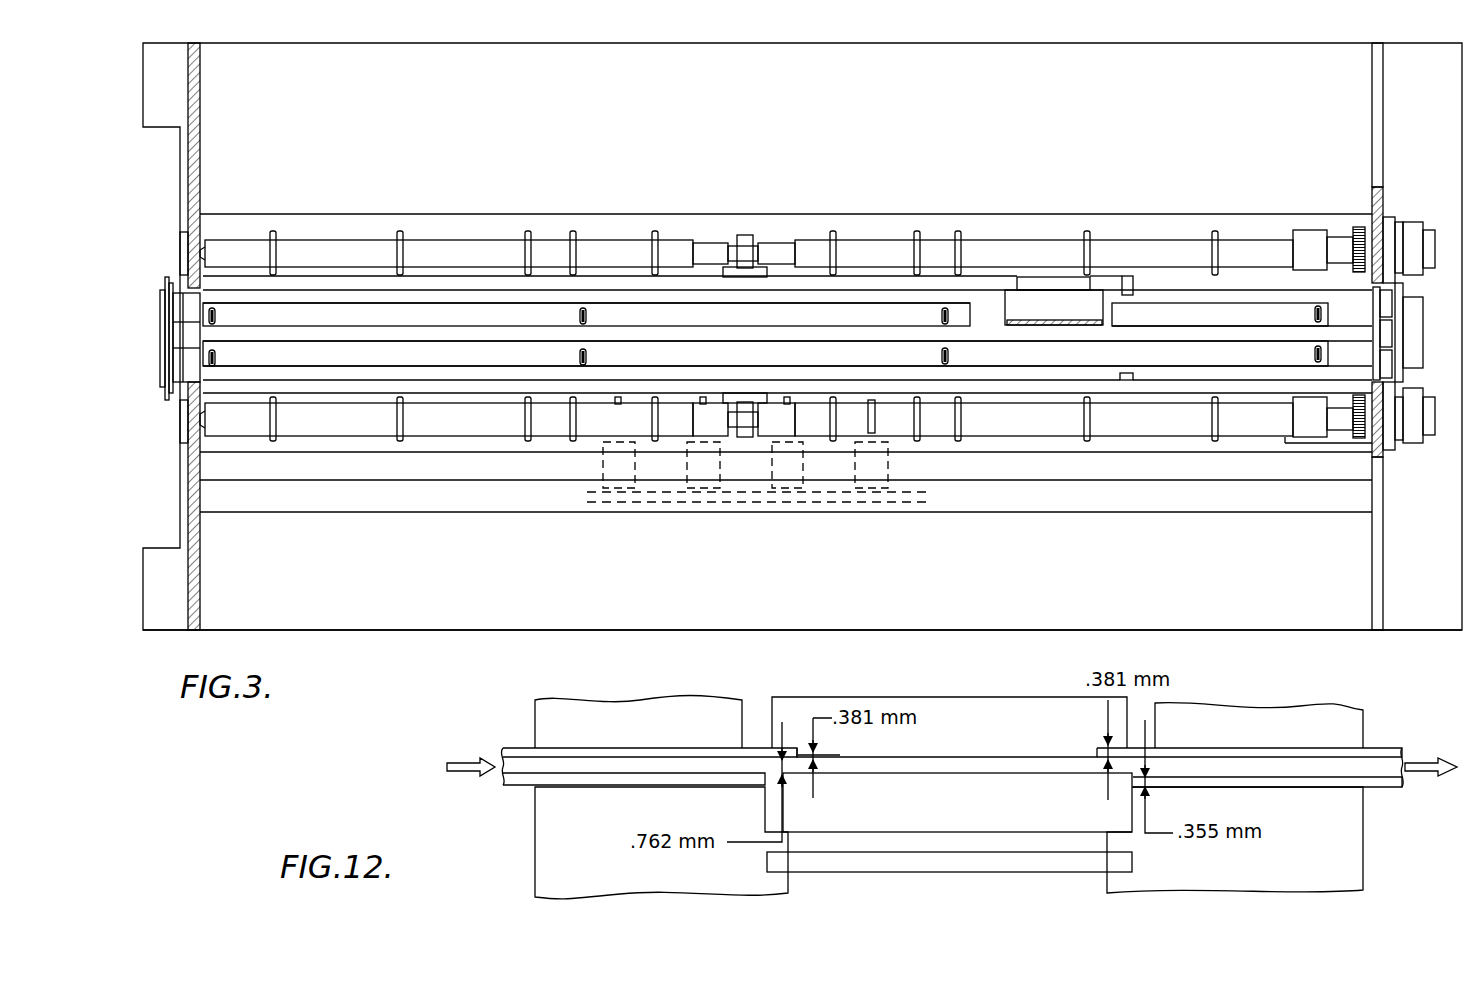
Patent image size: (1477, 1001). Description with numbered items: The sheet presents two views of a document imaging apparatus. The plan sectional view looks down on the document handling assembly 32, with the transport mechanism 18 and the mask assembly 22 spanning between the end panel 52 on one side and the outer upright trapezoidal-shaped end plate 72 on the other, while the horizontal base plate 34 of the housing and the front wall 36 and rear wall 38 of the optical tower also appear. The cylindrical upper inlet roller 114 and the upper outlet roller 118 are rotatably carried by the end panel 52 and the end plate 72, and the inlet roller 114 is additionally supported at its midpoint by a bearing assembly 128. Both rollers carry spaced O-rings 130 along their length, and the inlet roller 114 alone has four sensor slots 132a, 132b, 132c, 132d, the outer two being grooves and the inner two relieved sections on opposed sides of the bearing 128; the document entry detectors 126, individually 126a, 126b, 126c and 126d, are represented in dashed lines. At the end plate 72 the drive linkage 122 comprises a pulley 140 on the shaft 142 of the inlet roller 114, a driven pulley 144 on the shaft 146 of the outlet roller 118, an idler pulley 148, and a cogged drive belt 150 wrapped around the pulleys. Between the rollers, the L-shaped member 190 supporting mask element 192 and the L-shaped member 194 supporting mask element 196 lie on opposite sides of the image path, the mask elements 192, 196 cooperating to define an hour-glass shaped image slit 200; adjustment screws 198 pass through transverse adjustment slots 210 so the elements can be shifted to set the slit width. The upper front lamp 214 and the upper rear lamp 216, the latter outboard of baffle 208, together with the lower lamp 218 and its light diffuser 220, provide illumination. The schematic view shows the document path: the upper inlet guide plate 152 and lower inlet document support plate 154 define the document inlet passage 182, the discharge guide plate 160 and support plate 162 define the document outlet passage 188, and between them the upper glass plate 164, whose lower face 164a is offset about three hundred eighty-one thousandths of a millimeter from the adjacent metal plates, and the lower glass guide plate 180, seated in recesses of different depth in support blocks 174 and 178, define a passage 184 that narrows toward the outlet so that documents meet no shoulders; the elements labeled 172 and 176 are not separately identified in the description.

In FIG. 3, the transport mechanism 18 is at (1397, 138).
In FIG. 3, the mask assembly 22 is at (688, 298).
In FIG. 3, the document handling assembly 32 is at (1345, 520).
In FIG. 3, the horizontal base plate 34 is at (447, 628).
In FIG. 3, the front wall 36 is at (1230, 385).
In FIG. 3, the rear wall 38 is at (1225, 280).
In FIG. 3, the end panel 52 is at (188, 215).
In FIG. 3, the outer upright trapezoidal-shaped end plate 72 is at (1372, 195).
In FIG. 3, the upper inlet roller 114 is at (1028, 423).
In FIG. 3, the upper outlet roller 118 is at (880, 240).
In FIG. 3, the drive linkage 122 is at (1403, 205).
In FIG. 3, the document entry detectors 126 is at (590, 510).
In FIG. 3, the document entry detector 126a is at (633, 470).
In FIG. 3, the document entry detector 126b is at (700, 485).
In FIG. 3, the document entry detector 126c is at (790, 485).
In FIG. 3, the document entry detector 126d is at (867, 485).
In FIG. 3, the bearing assembly 128 is at (745, 240).
In FIG. 3, the O-rings 130 is at (397, 246).
In FIG. 3, the sensor slot 132a is at (617, 415).
In FIG. 3, the sensor slot 132b is at (700, 420).
In FIG. 3, the sensor slot 132c is at (787, 420).
In FIG. 3, the sensor slot 132d is at (873, 418).
In FIG. 3, the pulley 140 is at (1428, 447).
In FIG. 3, the shaft 142 is at (1345, 422).
In FIG. 3, the driven pulley 144 is at (1425, 225).
In FIG. 3, the shaft 146 is at (1345, 250).
In FIG. 3, the idler pulley 148 is at (1410, 358).
In FIG. 3, the cogged drive belt 150 is at (1412, 442).
In FIG. 12, the upper inlet guide plate 152 is at (527, 750).
In FIG. 12, the lower inlet document support plate 154 is at (525, 783).
In FIG. 12, the discharge guide plate 160 is at (1378, 748).
In FIG. 12, the support plate 162 is at (1380, 787).
In FIG. 12, the glass plate 164 is at (945, 700).
In FIG. 12, the lower face 164a is at (945, 757).
In FIG. 12, the upper inlet guide 172 is at (620, 722).
In FIG. 12, the support block 174 is at (548, 870).
In FIG. 3, the upper outlet guide 176 is at (1073, 283).
In FIG. 12, the upper outlet guide 176 is at (1323, 727).
In FIG. 12, the support block 178 is at (1355, 830).
In FIG. 12, the lower glass guide plate 180 is at (960, 815).
In FIG. 12, the document inlet passage 182 is at (628, 775).
In FIG. 12, the passage 184 is at (1040, 777).
In FIG. 12, the document outlet passage 188 is at (1207, 760).
In FIG. 3, the L-shaped member 190 is at (1005, 373).
In FIG. 3, the mask element 192 is at (473, 358).
In FIG. 3, the L-shaped member 194 is at (983, 303).
In FIG. 3, the mask element 196 is at (421, 316).
In FIG. 3, the adjustment screw components 198 is at (590, 358).
In FIG. 3, the image slit 200 is at (1245, 333).
In FIG. 3, the baffle 208 is at (1028, 320).
In FIG. 3, the transverse adjustment slots 210 is at (572, 358).
In FIG. 3, the upper front lamp 214 is at (192, 367).
In FIG. 3, the upper rear lamp 216 is at (1055, 302).
In FIG. 3, the lower lamp 218 is at (188, 338).
In FIG. 12, the light diffuser 220 is at (878, 865).